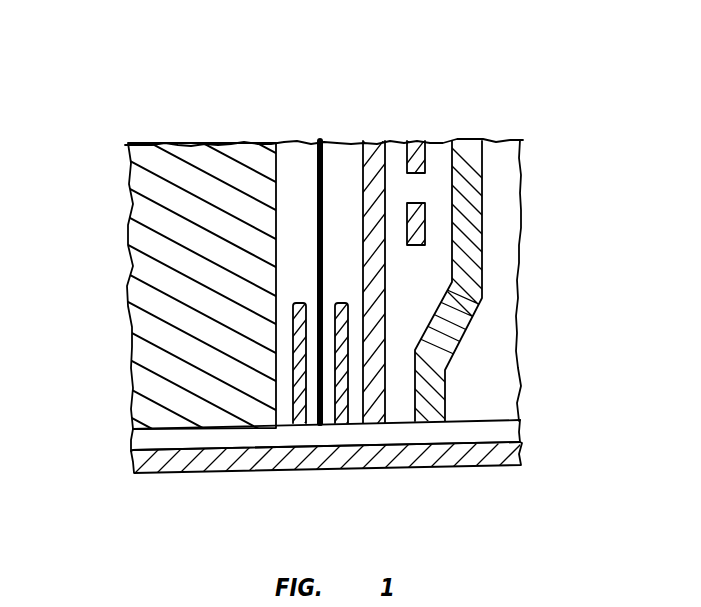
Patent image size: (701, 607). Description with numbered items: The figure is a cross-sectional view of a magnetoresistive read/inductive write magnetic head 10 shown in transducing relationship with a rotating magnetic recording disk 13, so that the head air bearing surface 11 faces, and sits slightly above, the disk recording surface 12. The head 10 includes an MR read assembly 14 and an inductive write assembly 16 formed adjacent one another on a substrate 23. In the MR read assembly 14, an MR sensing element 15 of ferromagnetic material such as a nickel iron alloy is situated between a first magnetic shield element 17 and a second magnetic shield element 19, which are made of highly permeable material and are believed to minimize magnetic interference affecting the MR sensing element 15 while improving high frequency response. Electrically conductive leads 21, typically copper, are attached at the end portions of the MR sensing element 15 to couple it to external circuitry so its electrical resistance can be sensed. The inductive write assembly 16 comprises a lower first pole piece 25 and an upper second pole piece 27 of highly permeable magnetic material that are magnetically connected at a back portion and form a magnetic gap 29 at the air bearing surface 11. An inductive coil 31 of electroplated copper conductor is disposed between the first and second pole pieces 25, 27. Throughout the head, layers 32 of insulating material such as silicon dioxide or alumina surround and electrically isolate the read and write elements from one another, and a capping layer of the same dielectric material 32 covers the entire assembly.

The magnetoresistive read/inductive write magnetic head 10 is at (113, 310).
The air bearing surface 11 is at (173, 430).
The disk recording surface 12 is at (173, 447).
The magnetic recording disk 13 is at (133, 465).
The MR read assembly 14 is at (288, 88).
The MR sensing element 15 is at (318, 423).
The inductive write assembly 16 is at (375, 92).
The first magnetic shield element 17 is at (300, 425).
The second magnetic shield element 19 is at (343, 423).
The electrically conductive leads 21 is at (317, 163).
The substrate 23 is at (147, 372).
The first pole piece 25 is at (378, 423).
The second pole piece 27 is at (459, 421).
The magnetic gap 29 is at (398, 423).
The inductive coil 31 is at (425, 191).
The layers of insulating material 32 is at (310, 213).